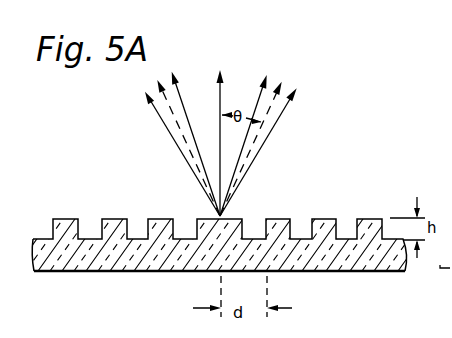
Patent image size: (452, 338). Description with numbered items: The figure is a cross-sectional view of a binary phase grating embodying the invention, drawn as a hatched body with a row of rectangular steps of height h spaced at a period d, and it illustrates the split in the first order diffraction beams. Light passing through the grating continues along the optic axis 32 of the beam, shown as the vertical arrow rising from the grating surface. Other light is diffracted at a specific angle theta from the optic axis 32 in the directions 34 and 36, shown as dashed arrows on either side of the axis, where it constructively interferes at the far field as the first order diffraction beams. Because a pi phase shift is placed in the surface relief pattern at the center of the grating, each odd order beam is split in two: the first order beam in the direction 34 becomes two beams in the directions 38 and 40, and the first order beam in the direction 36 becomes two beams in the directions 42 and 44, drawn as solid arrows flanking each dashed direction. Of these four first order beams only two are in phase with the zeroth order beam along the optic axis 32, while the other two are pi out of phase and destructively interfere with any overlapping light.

The optic axis 32 is at (222, 95).
The direction 34 is at (283, 86).
The direction 36 is at (155, 88).
The direction 38 is at (282, 117).
The direction 40 is at (259, 96).
The direction 42 is at (180, 97).
The direction 44 is at (158, 118).